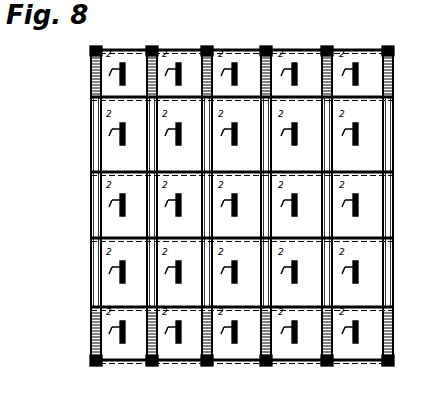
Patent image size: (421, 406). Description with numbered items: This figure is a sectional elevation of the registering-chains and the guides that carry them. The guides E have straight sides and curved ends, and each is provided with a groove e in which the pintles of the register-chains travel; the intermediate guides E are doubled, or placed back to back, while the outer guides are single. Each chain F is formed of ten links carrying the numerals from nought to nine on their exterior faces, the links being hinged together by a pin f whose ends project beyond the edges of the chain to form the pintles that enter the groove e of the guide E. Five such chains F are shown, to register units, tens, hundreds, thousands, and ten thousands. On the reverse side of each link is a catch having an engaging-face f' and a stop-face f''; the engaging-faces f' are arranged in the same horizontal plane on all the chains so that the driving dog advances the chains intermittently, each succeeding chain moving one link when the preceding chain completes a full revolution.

The guide E is at (388, 208).
The groove e is at (383, 48).
The pin f is at (243, 204).
The chain F is at (233, 209).
The engaging-face f' is at (227, 203).
The stop-face f'' is at (245, 192).